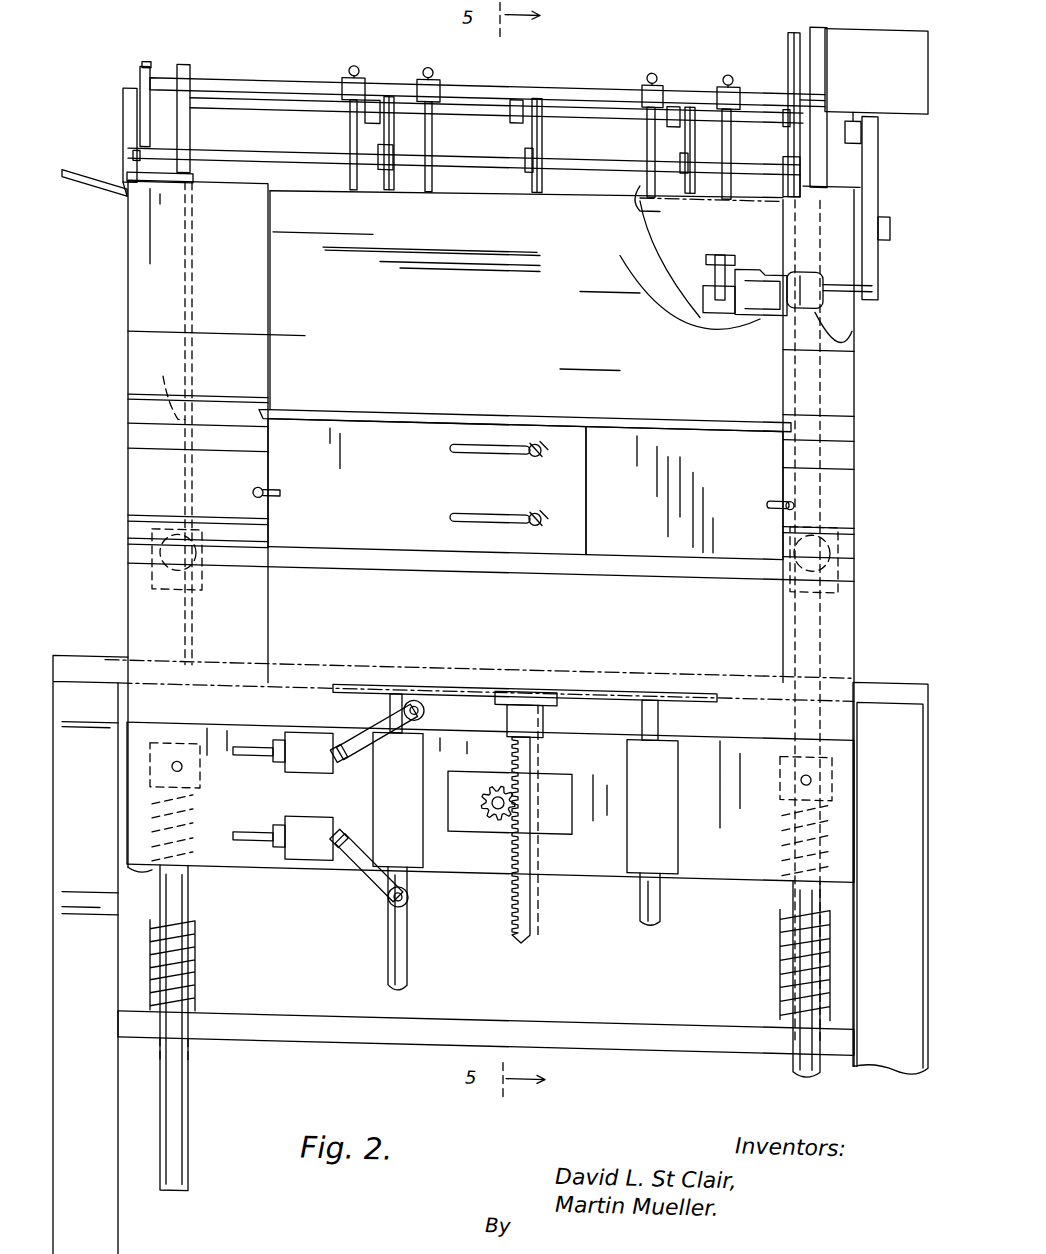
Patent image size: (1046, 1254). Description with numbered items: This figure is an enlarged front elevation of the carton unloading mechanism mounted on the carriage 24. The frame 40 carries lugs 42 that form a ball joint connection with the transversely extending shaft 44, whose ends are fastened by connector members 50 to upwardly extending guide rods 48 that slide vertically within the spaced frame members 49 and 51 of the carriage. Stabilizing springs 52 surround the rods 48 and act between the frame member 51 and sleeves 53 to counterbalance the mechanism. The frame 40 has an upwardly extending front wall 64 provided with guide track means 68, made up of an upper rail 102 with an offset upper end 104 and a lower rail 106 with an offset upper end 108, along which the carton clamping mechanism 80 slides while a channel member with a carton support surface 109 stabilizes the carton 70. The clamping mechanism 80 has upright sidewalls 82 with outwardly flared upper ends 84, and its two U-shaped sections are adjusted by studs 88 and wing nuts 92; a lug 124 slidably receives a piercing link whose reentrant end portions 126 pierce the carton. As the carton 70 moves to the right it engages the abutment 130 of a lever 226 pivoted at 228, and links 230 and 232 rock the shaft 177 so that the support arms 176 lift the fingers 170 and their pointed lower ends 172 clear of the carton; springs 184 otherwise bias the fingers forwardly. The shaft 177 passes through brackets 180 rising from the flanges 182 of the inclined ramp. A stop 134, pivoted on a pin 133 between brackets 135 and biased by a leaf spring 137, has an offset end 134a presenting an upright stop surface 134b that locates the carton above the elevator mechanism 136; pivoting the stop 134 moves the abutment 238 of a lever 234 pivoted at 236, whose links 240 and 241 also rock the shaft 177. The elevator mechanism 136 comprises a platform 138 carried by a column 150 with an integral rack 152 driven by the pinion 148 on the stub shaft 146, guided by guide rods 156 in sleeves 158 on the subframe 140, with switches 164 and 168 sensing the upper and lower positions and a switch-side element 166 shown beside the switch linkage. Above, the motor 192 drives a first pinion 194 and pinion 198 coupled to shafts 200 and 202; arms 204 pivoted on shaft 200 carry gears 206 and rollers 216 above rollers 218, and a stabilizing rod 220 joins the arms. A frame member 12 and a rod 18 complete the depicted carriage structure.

The bolt 12 is at (795, 486).
The rod 18 is at (782, 1056).
The carriage 24 is at (128, 1237).
The frame 40 is at (118, 327).
The lugs 42 is at (163, 372).
The shaft 44 is at (160, 551).
The guide rods 48 is at (198, 1068).
The frame member 49 is at (83, 624).
The connector members 50 is at (152, 580).
The frame member 51 is at (322, 1034).
The stabilizing springs 52 is at (197, 935).
The sleeves 53 is at (200, 778).
The front wall 64 is at (305, 632).
The guide track means 68 is at (104, 383).
The carton 70 is at (258, 220).
The carton clamping mechanism 80 is at (383, 554).
The sidewalls 82 is at (385, 470).
The flared upper ends 84 is at (420, 400).
The studs 88 is at (540, 440).
The wing nuts 92 is at (530, 504).
The upper rail 102 is at (220, 414).
The offset upper end 104 is at (128, 430).
The lower rail 106 is at (132, 497).
The offset upper end 108 is at (128, 517).
The carton support surface 109 is at (150, 260).
The lug 124 is at (253, 486).
The reentrant end portions 126 is at (278, 486).
The abutment 130 is at (72, 176).
The pin 133 is at (712, 240).
The stop 134 is at (828, 290).
The offset end 134a is at (848, 322).
The stop surface 134b is at (770, 300).
The brackets 135 is at (706, 258).
The elevator mechanism 136 is at (533, 643).
The leaf spring 137 is at (810, 232).
The platform 138 is at (612, 675).
The subframe 140 is at (700, 876).
The stub shaft 146 is at (515, 790).
The pinion 148 is at (490, 810).
The column 150 is at (545, 705).
The rack 152 is at (510, 893).
The guide rods 156 is at (660, 700).
The sleeves 158 is at (423, 742).
The switch 164 is at (305, 809).
The roller 166 is at (418, 690).
The switch 168 is at (308, 725).
The fingers 170 is at (340, 137).
The pointed lower end 172 is at (700, 182).
The support arms 176 is at (342, 78).
The shaft 177 is at (553, 82).
The brackets 180 is at (190, 64).
The flanges 182 is at (300, 101).
The springs 184 is at (428, 57).
The motor 192 is at (865, 108).
The first pinion 194 is at (788, 22).
The pinion 198 is at (790, 178).
The shaft 200 is at (228, 82).
The shaft 202 is at (490, 160).
The arms 204 is at (365, 105).
The gear 206 is at (355, 150).
The roller 216 is at (353, 100).
The roller 218 is at (392, 182).
The stabilizing rod 220 is at (533, 145).
The lever 226 is at (123, 125).
The pivot 228 is at (133, 155).
The link 230 is at (140, 90).
The link 232 is at (142, 62).
The lever 234 is at (878, 160).
The pivot 236 is at (884, 195).
The abutment 238 is at (872, 267).
The link 240 is at (822, 80).
The link 241 is at (861, 112).